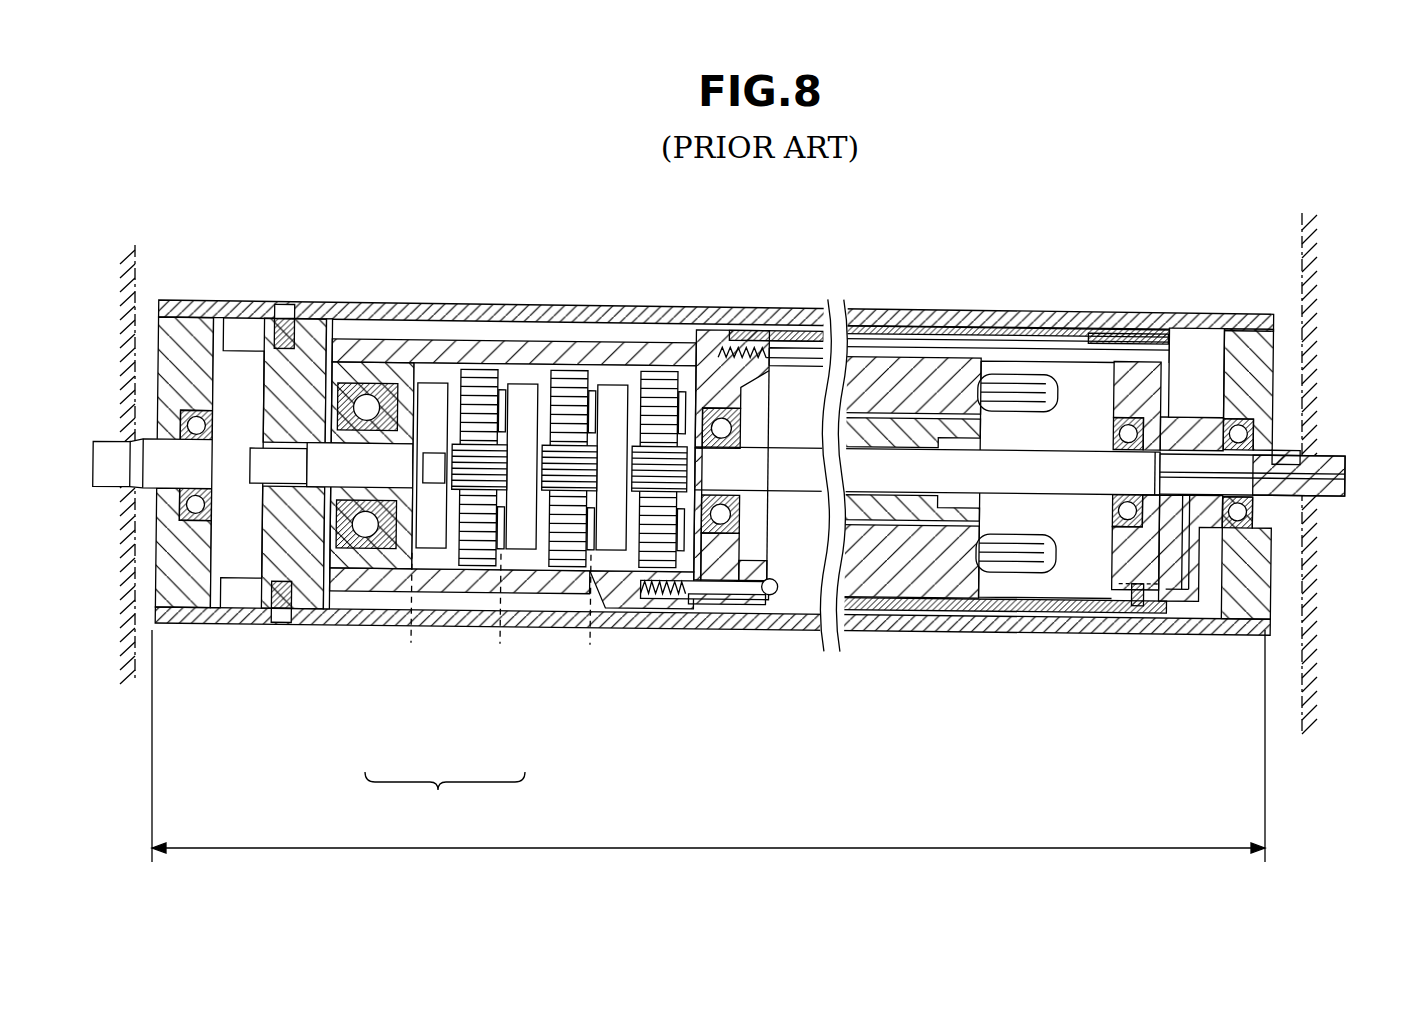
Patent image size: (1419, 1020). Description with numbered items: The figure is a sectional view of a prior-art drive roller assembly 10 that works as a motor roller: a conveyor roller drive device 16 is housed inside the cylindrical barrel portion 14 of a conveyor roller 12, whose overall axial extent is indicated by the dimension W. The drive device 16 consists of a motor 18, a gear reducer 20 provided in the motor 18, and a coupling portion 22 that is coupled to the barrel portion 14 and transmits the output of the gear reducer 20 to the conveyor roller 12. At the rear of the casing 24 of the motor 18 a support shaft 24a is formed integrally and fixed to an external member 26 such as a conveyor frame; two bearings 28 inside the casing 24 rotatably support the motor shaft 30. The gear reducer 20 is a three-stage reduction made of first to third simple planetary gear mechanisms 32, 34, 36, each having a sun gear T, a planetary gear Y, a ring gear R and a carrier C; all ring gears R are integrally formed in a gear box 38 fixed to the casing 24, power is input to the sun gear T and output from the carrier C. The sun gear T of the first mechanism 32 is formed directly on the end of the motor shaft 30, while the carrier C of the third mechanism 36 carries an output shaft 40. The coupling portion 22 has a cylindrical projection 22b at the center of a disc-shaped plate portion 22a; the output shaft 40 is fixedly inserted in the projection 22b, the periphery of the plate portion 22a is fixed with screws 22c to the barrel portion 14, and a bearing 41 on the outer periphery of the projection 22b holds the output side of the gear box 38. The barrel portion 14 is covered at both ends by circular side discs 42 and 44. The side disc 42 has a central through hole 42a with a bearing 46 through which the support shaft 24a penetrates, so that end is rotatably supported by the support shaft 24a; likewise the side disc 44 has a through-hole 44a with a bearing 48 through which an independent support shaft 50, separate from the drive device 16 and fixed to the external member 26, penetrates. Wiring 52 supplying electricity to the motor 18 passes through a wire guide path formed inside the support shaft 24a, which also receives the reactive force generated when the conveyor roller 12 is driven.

The drive roller assembly 10 is at (398, 186).
The conveyor roller 12 is at (553, 440).
The barrel portion 14 is at (604, 262).
The conveyor roller drive device 16 is at (445, 797).
The motor 18 is at (793, 603).
The gear reducer 20 is at (363, 580).
The coupling portion 22 is at (303, 596).
The plate portion 22a is at (280, 380).
The cylindrical projection 22b is at (312, 400).
The screws 22c is at (284, 345).
The casing 24 is at (1178, 353).
The support shaft 24a is at (1322, 457).
The external member 26 is at (136, 250).
The bearings 28 is at (733, 428).
The motor shaft 30 is at (1020, 465).
The first simple planetary gear mechanism 32 is at (680, 632).
The second simple planetary gear mechanism 34 is at (590, 632).
The third simple planetary gear mechanism 36 is at (500, 632).
The gear box 38 is at (453, 340).
The output shaft 40 is at (264, 585).
The bearing 41 is at (366, 403).
The side disc 42 is at (1243, 340).
The through hole 42a is at (1276, 457).
The side disc 44 is at (183, 335).
The through-hole 44a is at (169, 480).
The bearing 46 is at (1235, 428).
The bearing 48 is at (188, 426).
The independent support shaft 50 is at (103, 478).
The wiring 52 is at (1190, 592).
The carrier C is at (432, 393).
The ring gear R is at (482, 378).
The planetary gear Y is at (518, 397).
The sun gear T is at (688, 466).
The width W is at (708, 746).